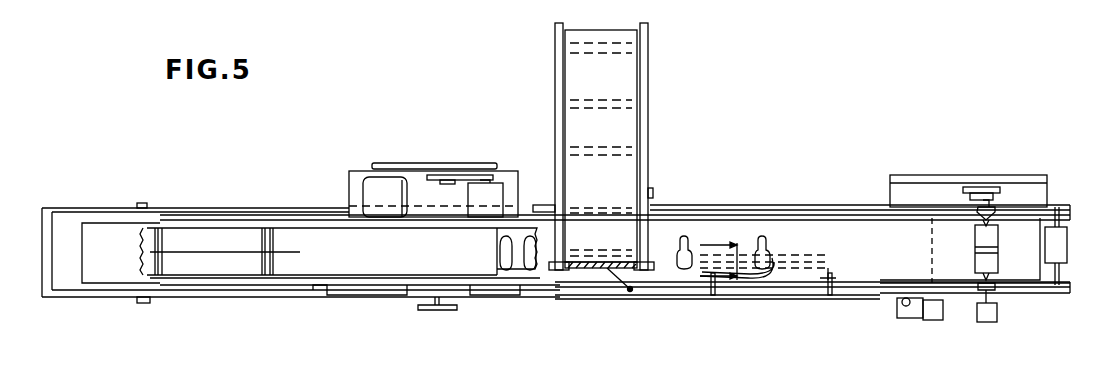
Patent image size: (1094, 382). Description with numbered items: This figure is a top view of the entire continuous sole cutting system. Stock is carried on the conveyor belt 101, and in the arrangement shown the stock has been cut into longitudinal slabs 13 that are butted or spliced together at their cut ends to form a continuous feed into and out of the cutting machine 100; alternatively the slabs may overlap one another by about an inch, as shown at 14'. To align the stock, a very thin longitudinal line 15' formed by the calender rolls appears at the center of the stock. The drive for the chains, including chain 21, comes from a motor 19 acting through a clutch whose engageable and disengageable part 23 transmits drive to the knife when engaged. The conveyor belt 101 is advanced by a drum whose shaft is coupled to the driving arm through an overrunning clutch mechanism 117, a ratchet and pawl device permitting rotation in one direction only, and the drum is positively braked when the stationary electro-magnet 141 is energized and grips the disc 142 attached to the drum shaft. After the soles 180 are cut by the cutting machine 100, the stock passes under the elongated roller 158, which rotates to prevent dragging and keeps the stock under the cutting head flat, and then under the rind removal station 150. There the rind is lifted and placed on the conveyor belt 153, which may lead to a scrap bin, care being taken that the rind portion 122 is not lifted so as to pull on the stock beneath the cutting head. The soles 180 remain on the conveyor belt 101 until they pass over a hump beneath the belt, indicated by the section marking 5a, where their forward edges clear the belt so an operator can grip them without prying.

The conveyor belt 101 is at (106, 226).
The thin longitudinal line 15' is at (176, 227).
The overlap of slabs 14' is at (225, 277).
The longitudinal slab 13 is at (330, 268).
The rind portion 122 is at (527, 272).
The motor 19 is at (383, 180).
The chain 21 is at (488, 168).
The clutch part 23 is at (462, 184).
The cutting machine 100 is at (420, 165).
The rind removal station 150 is at (547, 170).
The conveyor belt 153 is at (625, 125).
The elongated roller 158 is at (605, 270).
The soles 180 is at (682, 236).
The section line 5a is at (748, 259).
The stationary electro-magnet 141 is at (990, 187).
The disc 142 is at (980, 188).
The overrunning clutch mechanism 117 is at (986, 312).